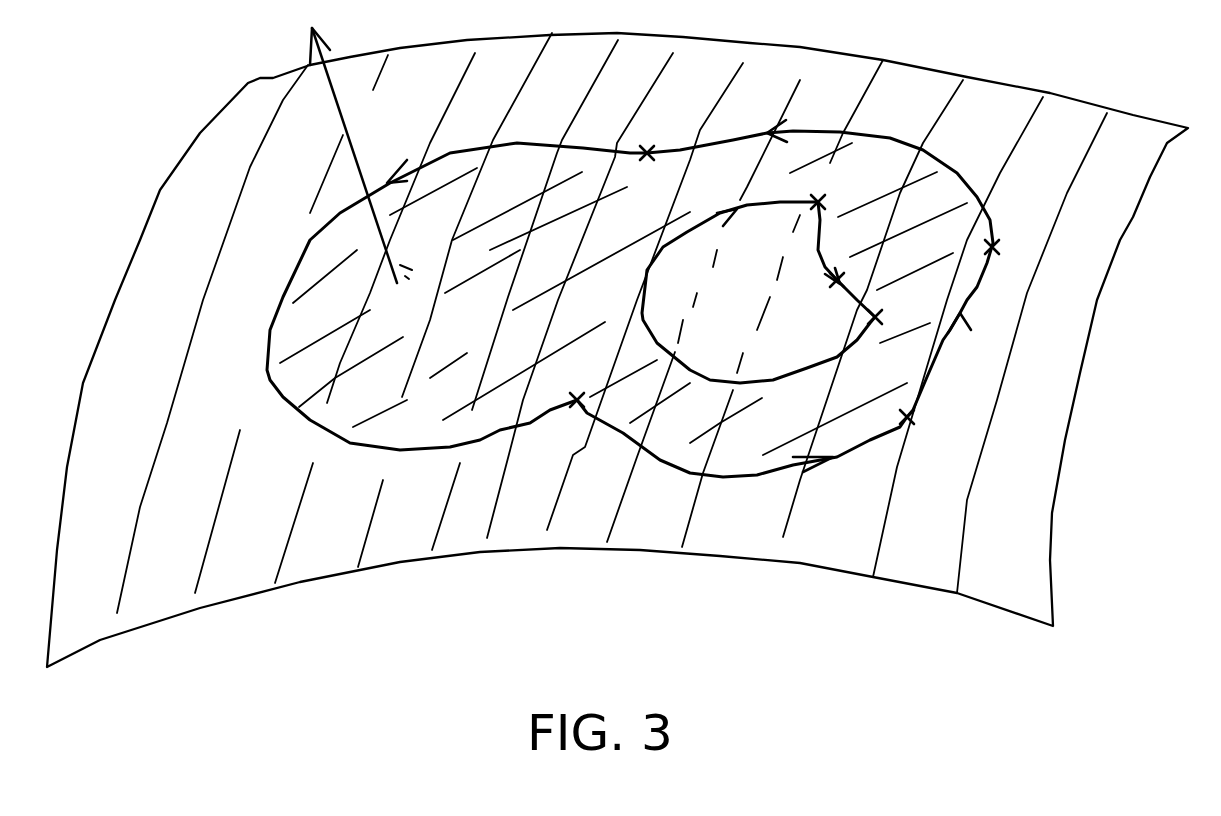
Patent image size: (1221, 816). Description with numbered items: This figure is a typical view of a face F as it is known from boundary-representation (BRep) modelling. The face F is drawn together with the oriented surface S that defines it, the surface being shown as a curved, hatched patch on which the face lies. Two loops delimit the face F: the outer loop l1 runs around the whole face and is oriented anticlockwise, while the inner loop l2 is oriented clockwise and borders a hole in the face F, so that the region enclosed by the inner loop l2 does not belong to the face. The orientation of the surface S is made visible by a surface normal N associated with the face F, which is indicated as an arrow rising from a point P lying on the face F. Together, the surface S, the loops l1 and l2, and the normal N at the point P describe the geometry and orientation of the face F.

The surface S is at (617, 350).
The face F is at (623, 299).
The point P is at (400, 297).
The surface normal N is at (353, 155).
The outer loop l1 is at (633, 298).
The inner loop l2 is at (762, 289).